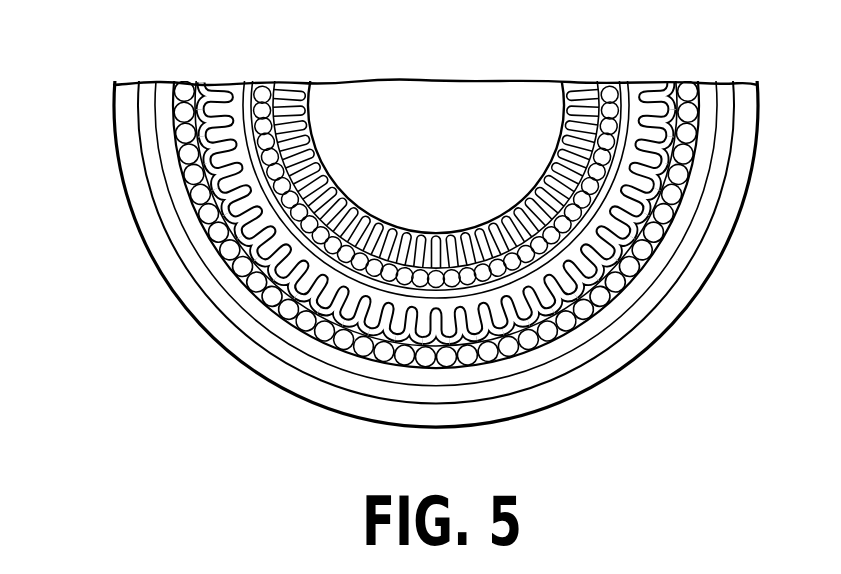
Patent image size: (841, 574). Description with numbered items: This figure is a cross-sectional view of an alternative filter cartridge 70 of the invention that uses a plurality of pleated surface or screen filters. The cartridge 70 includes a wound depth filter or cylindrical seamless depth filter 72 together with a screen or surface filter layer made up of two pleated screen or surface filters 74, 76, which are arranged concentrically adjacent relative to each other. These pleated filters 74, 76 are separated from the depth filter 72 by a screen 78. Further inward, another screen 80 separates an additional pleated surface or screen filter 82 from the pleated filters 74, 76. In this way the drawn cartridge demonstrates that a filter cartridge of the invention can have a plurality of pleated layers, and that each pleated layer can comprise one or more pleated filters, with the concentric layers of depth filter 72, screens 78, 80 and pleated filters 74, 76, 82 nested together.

The filter cartridge 70 is at (131, 341).
The depth filter 72 is at (625, 345).
The pleated screen or surface filter 74 is at (650, 92).
The pleated screen or surface filter 76 is at (692, 115).
The screen 78 is at (650, 248).
The screen 80 is at (262, 82).
The pleated surface or screen filter 82 is at (287, 84).